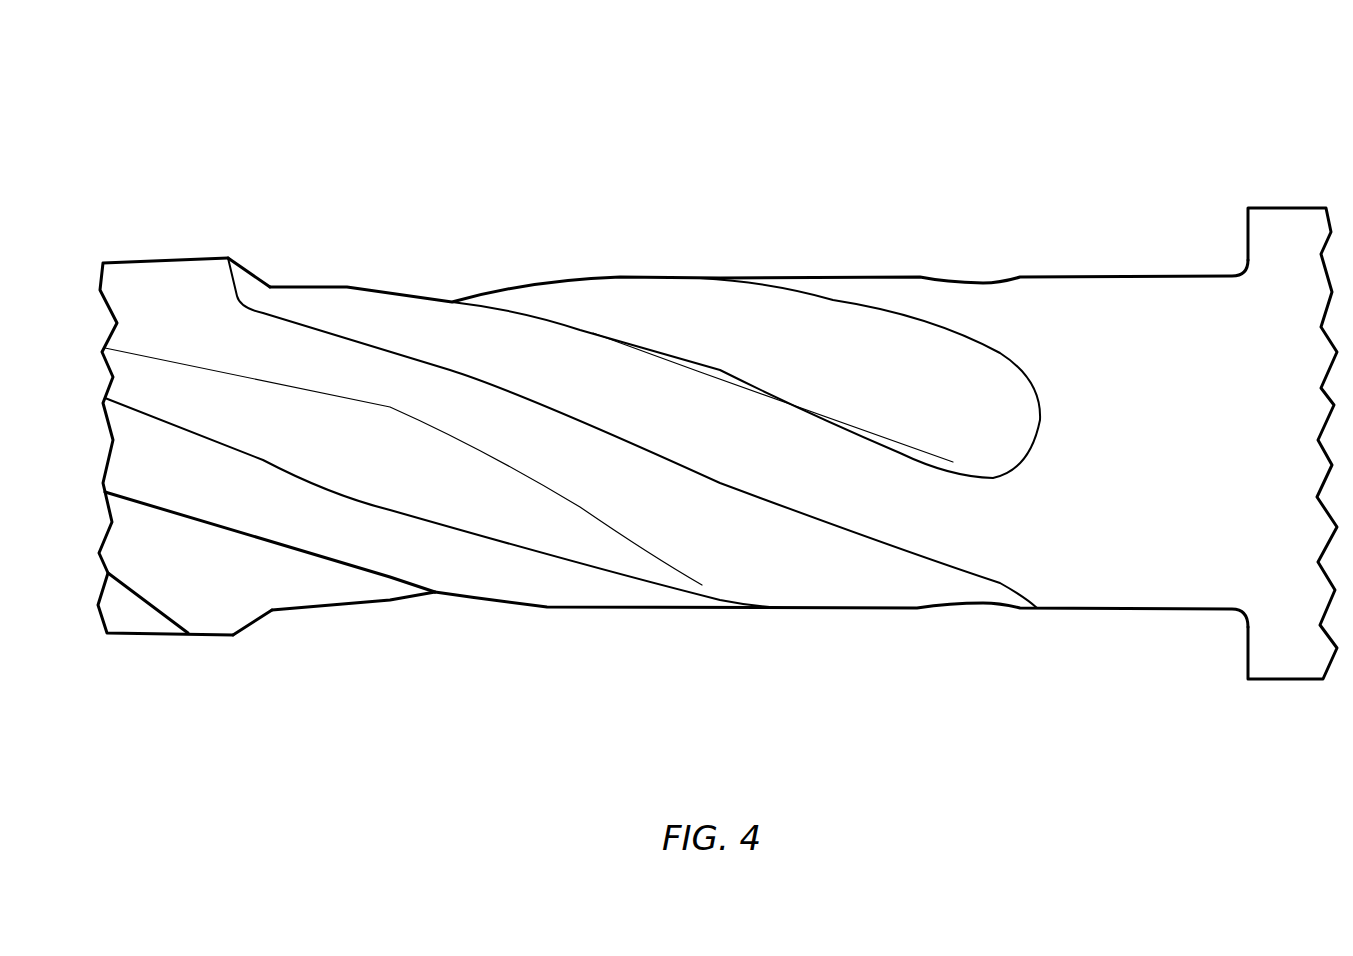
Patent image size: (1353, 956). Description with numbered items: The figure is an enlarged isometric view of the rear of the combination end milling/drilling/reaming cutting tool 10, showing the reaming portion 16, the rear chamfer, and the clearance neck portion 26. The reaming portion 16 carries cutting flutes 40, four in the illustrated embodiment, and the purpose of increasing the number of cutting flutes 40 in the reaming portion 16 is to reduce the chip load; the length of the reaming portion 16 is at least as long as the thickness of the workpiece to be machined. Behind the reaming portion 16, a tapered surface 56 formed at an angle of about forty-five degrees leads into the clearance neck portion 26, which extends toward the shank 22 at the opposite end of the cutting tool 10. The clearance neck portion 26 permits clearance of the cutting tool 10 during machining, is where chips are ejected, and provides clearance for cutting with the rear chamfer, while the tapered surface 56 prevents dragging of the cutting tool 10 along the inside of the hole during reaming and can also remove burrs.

The cutting tool 10 is at (990, 127).
The reaming portion 16 is at (156, 223).
The shank 22 is at (1287, 195).
The clearance neck portion 26 is at (605, 250).
The cutting flutes 40 is at (675, 308).
The tapered surface 56 is at (250, 270).